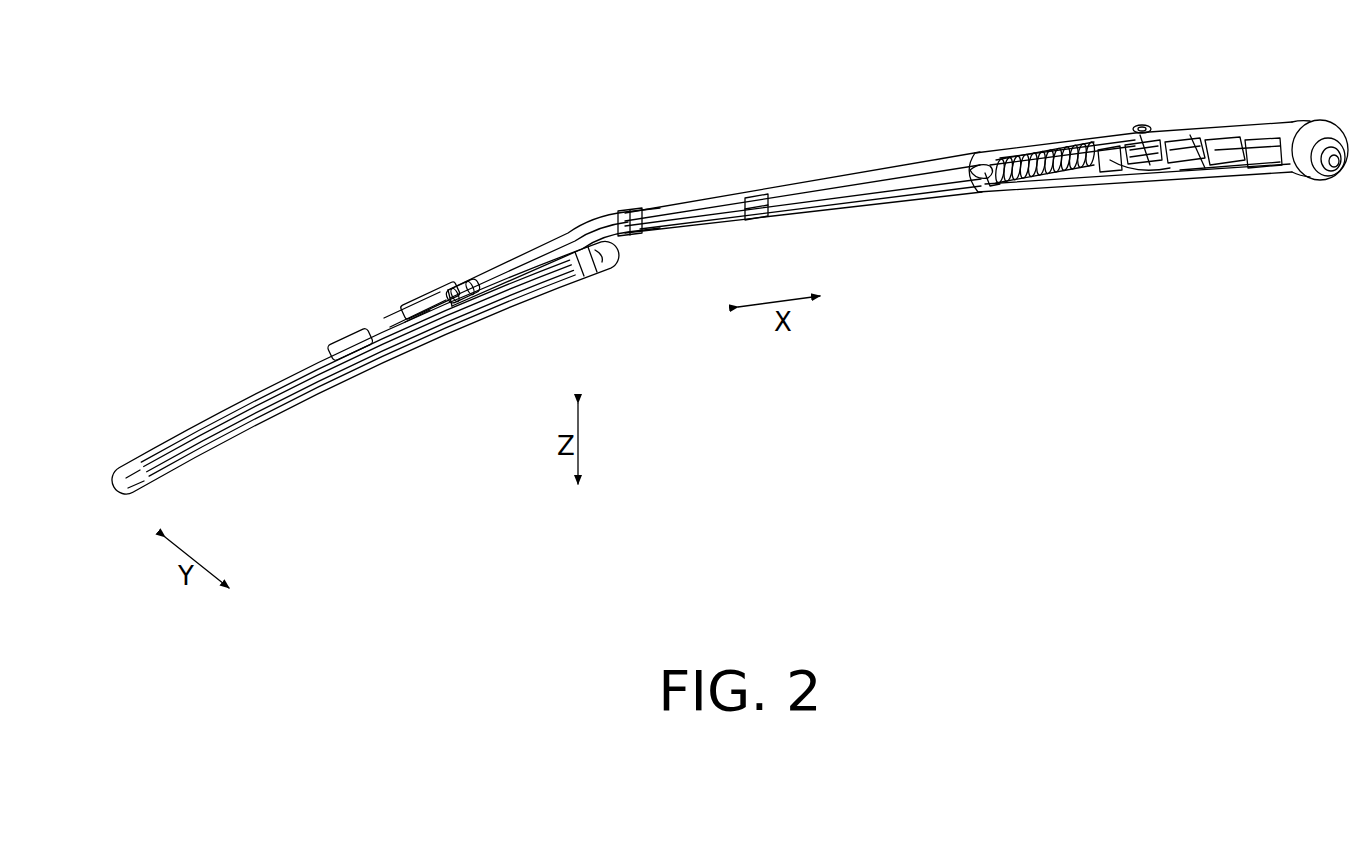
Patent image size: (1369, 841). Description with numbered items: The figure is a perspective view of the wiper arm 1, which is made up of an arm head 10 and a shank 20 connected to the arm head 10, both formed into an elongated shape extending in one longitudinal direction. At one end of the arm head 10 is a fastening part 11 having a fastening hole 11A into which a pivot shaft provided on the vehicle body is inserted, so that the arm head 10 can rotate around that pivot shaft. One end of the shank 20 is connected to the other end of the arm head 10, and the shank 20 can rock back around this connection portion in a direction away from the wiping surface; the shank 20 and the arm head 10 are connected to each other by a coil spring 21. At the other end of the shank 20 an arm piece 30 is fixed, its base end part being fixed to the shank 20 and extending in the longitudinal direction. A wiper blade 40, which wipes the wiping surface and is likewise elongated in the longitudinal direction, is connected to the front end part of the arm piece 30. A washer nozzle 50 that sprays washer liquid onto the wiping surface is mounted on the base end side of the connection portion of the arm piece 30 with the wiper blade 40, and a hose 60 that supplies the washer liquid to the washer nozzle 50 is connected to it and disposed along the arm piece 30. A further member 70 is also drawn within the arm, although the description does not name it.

The wiper arm 1 is at (734, 122).
The arm head 10 is at (1189, 116).
The fastening part 11 is at (1320, 135).
The fastening hole 11A is at (1322, 176).
The shank 20 is at (1015, 132).
The coil spring 21 is at (1050, 176).
The arm piece 30 is at (598, 209).
The wiper blade 40 is at (196, 428).
The washer nozzle 50 is at (437, 296).
The hose 60 is at (940, 183).
The link member 70 is at (1262, 176).